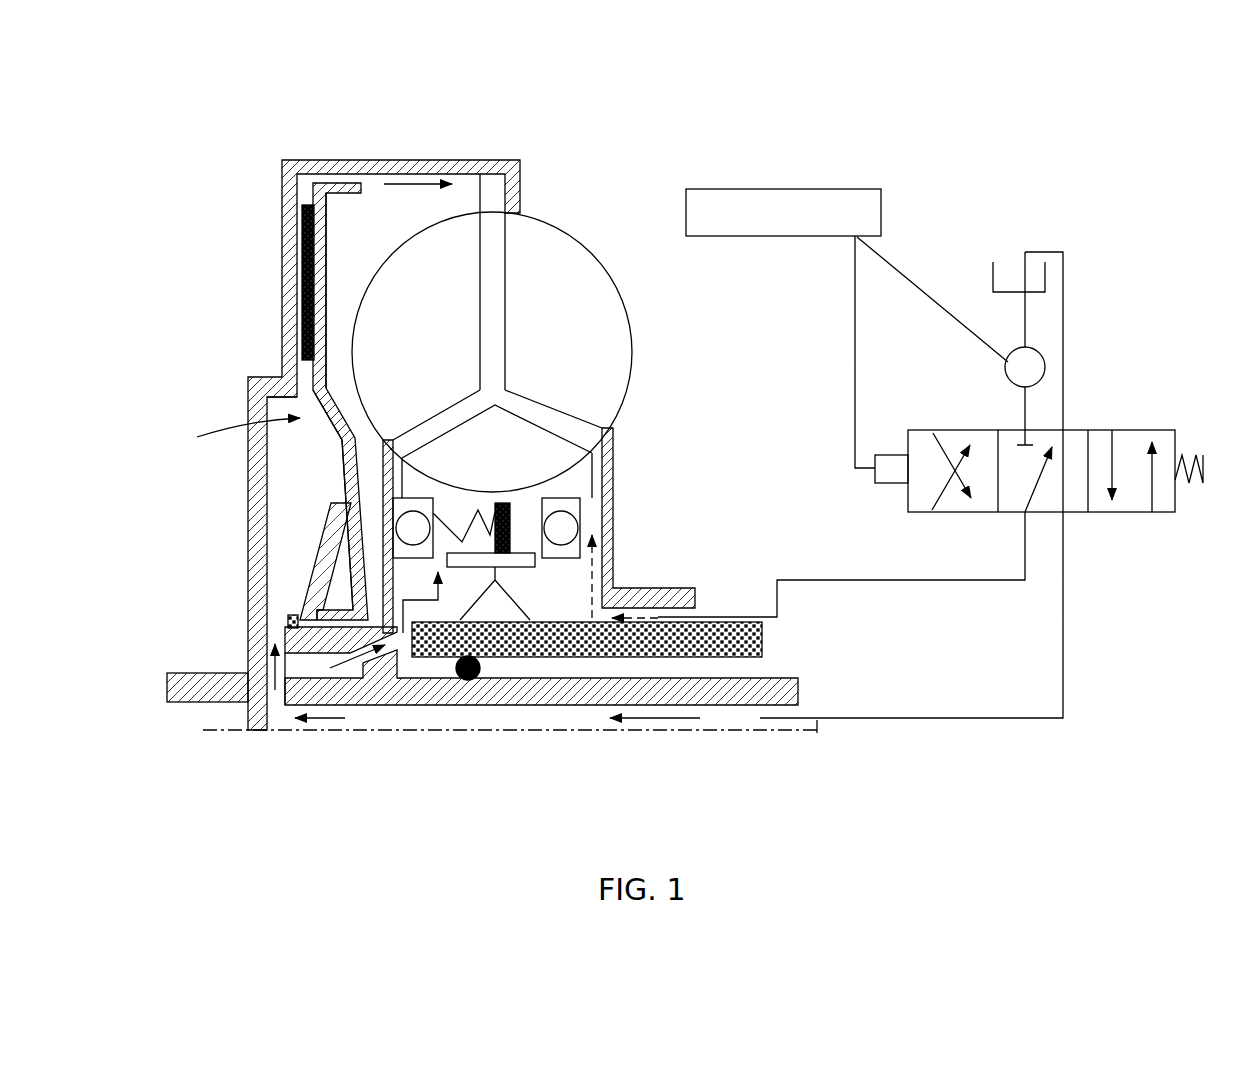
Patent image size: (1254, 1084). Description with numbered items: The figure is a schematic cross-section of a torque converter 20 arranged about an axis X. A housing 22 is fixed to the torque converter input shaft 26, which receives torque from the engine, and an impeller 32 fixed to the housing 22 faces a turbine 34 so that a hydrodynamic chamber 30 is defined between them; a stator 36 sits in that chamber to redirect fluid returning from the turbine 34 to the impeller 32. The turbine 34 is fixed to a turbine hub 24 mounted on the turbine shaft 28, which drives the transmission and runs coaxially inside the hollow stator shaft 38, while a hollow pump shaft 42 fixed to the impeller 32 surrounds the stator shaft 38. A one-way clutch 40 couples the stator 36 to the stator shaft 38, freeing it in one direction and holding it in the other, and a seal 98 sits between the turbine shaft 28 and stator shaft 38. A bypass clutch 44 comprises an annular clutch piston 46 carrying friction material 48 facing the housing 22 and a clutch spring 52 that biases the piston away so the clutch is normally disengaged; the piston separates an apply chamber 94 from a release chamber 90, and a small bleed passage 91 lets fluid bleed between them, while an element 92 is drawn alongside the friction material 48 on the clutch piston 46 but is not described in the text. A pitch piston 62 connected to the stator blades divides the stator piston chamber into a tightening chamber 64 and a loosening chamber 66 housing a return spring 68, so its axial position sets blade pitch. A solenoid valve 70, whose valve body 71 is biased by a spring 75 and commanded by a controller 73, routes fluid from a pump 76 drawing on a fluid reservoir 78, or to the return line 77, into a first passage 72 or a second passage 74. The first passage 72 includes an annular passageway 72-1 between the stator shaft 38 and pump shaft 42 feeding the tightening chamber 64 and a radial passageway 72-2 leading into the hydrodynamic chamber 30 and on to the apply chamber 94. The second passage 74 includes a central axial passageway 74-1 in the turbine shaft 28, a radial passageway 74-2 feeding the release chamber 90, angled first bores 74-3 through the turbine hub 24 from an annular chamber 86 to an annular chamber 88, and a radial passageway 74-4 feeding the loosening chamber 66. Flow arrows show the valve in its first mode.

The torque converter 20 is at (693, 306).
The housing 22 is at (336, 160).
The turbine hub 24 is at (288, 632).
The torque converter input shaft 26 is at (183, 703).
The turbine shaft 28 is at (788, 678).
The hydrodynamic chamber 30 is at (505, 309).
The impeller 32 is at (579, 338).
The turbine 34 is at (439, 338).
The stator 36 is at (508, 463).
The stator shaft 38 is at (723, 622).
The one-way clutch 40 is at (495, 617).
The pump shaft 42 is at (680, 590).
The bypass clutch 44 is at (235, 435).
The clutch piston 46 is at (318, 375).
The friction material 48 is at (303, 307).
The clutch spring 52 is at (318, 555).
The pitch piston 62 is at (510, 518).
The tightening chamber 64 is at (522, 539).
The loosening chamber 66 is at (445, 535).
The return spring 68 is at (435, 512).
The solenoid valve 70 is at (898, 440).
The valve body 71 is at (1003, 430).
The first passage 72 is at (735, 390).
The annular passageway 72-1 is at (636, 606).
The radial passageway 72-2 is at (583, 487).
The controller 73 is at (730, 189).
The second passage 74 is at (825, 755).
The central axial passageway 74-1 is at (733, 720).
The radial passageway 74-2 is at (272, 713).
The first bores 74-3 is at (378, 657).
The radial passageway 74-4 is at (293, 647).
The spring 75 is at (1197, 453).
The pump 76 is at (1015, 350).
The return line 77 is at (1045, 252).
The fluid reservoir 78 is at (993, 273).
The annular chamber 86 is at (293, 667).
The annular chamber 88 is at (418, 612).
The release chamber 90 is at (318, 468).
The bleed passage 91 is at (330, 178).
The seal 92 is at (313, 242).
The apply chamber 94 is at (431, 208).
The seal 98 is at (470, 680).
The axis X is at (817, 732).